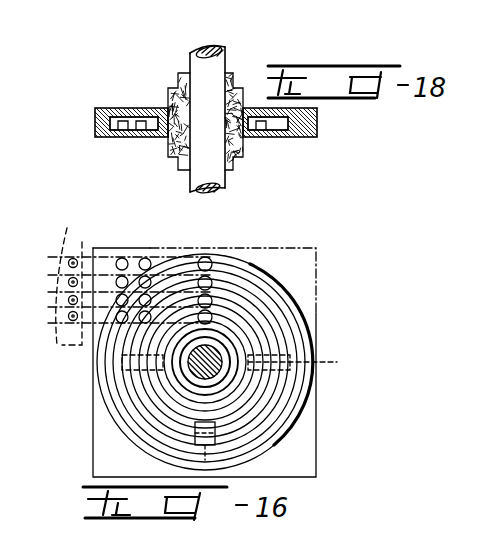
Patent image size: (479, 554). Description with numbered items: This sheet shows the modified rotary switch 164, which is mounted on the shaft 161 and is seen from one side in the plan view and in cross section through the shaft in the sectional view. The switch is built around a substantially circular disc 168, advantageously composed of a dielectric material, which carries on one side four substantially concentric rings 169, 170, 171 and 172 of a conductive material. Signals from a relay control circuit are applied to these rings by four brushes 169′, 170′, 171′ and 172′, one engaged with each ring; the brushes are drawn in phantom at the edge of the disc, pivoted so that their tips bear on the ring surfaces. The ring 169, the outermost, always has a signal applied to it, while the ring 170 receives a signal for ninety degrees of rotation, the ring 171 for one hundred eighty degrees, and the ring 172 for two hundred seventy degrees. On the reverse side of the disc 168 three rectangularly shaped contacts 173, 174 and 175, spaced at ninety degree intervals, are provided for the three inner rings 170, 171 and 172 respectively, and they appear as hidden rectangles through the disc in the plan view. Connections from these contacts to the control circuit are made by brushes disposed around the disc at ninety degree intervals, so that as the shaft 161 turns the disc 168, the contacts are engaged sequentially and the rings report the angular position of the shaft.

In FIG. 18, the shaft 161 is at (191, 63).
In FIG. 18, the circular disc 168 is at (113, 110).
In FIG. 16, the circular disc 168 is at (302, 418).
In FIG. 16, the modified rotary switch 164 is at (434, 290).
In FIG. 16, the ring 169 is at (251, 362).
In FIG. 16, the ring 170 is at (220, 359).
In FIG. 16, the ring 171 is at (205, 357).
In FIG. 16, the ring 172 is at (177, 401).
In FIG. 16, the rectangularly shaped contact 173 is at (123, 369).
In FIG. 16, the rectangularly shaped contact 174 is at (216, 446).
In FIG. 16, the rectangularly shaped contact 175 is at (275, 362).
In FIG. 16, the brush 169' is at (88, 286).
In FIG. 16, the brush 170' is at (72, 276).
In FIG. 16, the brush 171' is at (70, 308).
In FIG. 16, the brush 172' is at (117, 368).